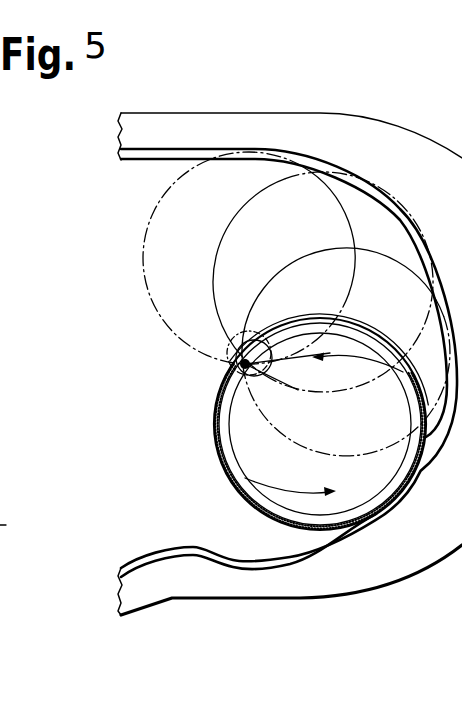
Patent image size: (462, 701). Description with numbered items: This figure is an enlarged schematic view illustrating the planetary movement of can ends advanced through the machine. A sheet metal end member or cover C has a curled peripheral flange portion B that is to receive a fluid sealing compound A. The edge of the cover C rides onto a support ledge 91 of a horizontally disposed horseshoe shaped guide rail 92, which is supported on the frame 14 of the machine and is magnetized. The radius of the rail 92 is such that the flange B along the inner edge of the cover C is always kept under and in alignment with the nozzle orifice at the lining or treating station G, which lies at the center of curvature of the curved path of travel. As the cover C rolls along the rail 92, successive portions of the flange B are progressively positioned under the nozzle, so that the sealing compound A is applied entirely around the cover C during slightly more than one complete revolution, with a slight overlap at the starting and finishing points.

The frame 14 is at (13, 526).
The support ledge 91 is at (143, 153).
The horseshoe shaped guide rail 92 is at (401, 140).
The lining or treating station G is at (208, 365).
The cover C is at (250, 414).
The fluid sealing compound A is at (226, 432).
The curled peripheral flange portion B is at (222, 458).